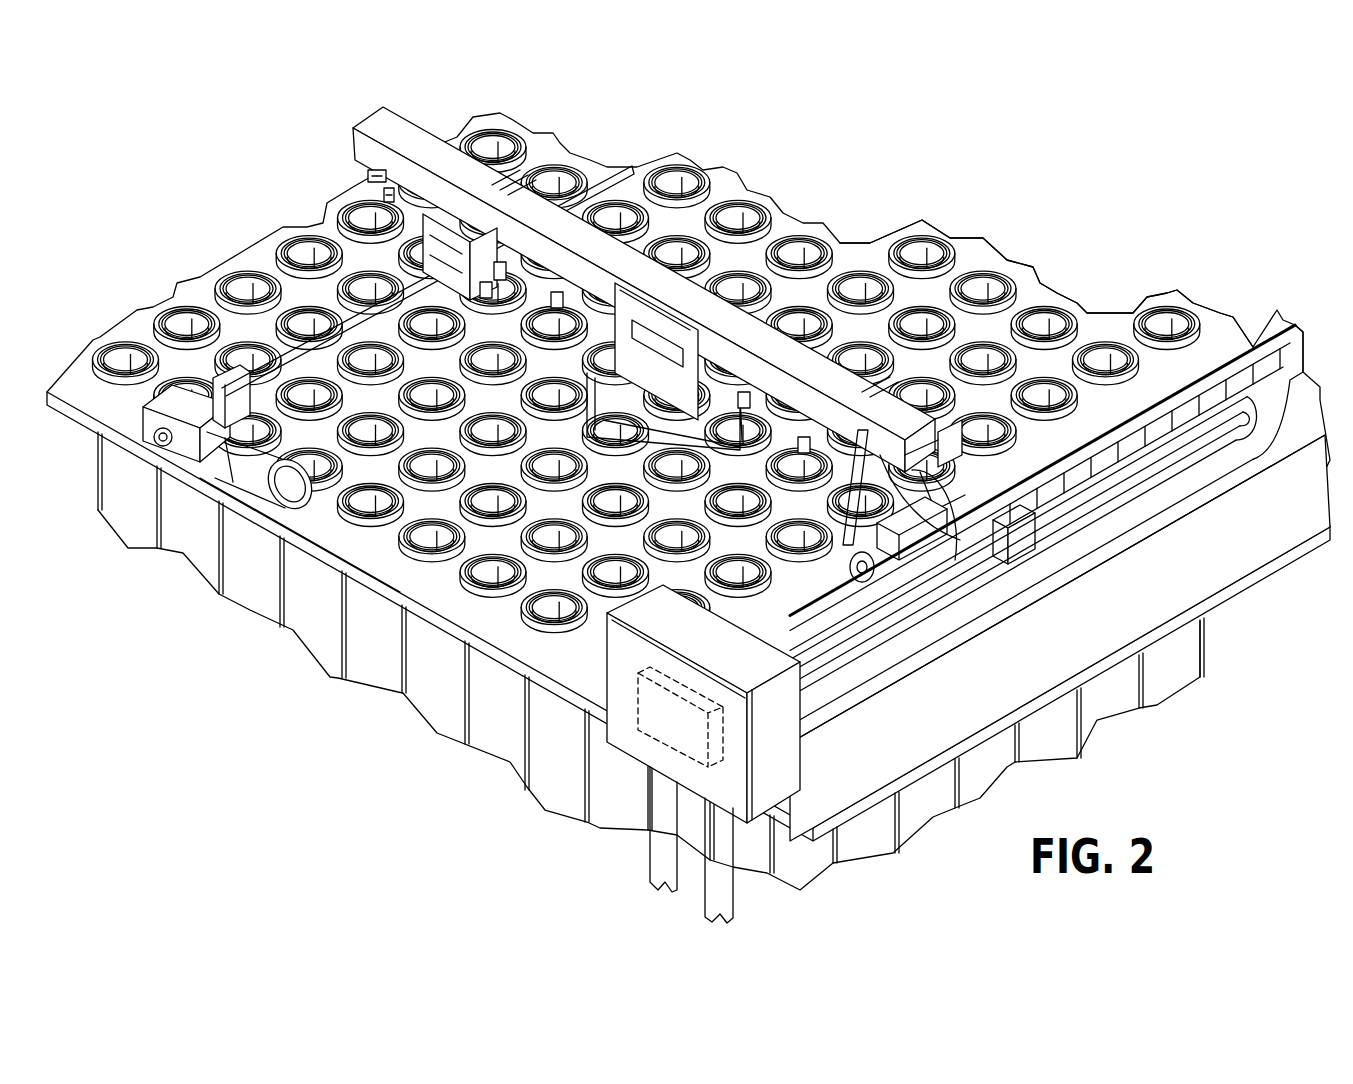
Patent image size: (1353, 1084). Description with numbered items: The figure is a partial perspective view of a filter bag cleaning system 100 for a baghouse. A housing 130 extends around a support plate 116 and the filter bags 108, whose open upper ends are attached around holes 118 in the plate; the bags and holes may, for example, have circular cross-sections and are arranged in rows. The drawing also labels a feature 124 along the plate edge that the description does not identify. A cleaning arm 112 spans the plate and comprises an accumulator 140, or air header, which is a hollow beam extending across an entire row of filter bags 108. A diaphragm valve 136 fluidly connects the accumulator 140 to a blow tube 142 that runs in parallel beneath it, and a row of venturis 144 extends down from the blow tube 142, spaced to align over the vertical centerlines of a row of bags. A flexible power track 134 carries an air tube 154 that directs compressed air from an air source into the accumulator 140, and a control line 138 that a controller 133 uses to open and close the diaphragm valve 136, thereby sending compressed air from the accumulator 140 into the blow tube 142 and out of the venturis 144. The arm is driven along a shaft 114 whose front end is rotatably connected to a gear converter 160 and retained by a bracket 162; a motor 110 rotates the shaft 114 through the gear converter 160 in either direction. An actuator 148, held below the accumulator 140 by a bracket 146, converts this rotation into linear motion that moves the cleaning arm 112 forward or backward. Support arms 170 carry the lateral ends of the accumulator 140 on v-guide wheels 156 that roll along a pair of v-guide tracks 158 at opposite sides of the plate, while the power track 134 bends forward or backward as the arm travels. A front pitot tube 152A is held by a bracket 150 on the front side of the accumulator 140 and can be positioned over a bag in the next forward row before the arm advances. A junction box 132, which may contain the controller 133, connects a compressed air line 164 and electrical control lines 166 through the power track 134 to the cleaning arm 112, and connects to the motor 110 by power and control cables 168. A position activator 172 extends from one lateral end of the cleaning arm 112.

The cleaning system 100 is at (688, 491).
The filter bags 108 is at (862, 283).
The motor 110 is at (247, 495).
The cleaning arm 112 is at (606, 276).
The shaft 114 is at (622, 168).
The support plate 116 is at (725, 180).
The holes 118 is at (800, 248).
The plate edge 124 is at (906, 142).
The housing 130 is at (317, 632).
The junction box 132 is at (805, 745).
The controller 133 is at (689, 685).
The flexible power track 134 is at (905, 677).
The diaphragm valve 136 is at (948, 465).
The control line 138 is at (930, 563).
The accumulator 140 is at (418, 142).
The blow tube 142 is at (368, 176).
The venturis 144 is at (384, 197).
The bracket 146 is at (428, 215).
The actuator 148 is at (488, 300).
The brackets 150 is at (618, 302).
The pitot tube 152A is at (610, 422).
The air tube 154 is at (955, 578).
The v-guide wheels 156 is at (849, 568).
The v-guide tracks 158 is at (1275, 336).
The gear converter 160 is at (142, 440).
The bracket 162 is at (235, 372).
The compressed air line 164 is at (735, 906).
The electrical control lines 166 is at (687, 738).
The power and control cables 168 is at (365, 562).
The support arms 170 is at (850, 505).
The position activator 172 is at (1018, 545).